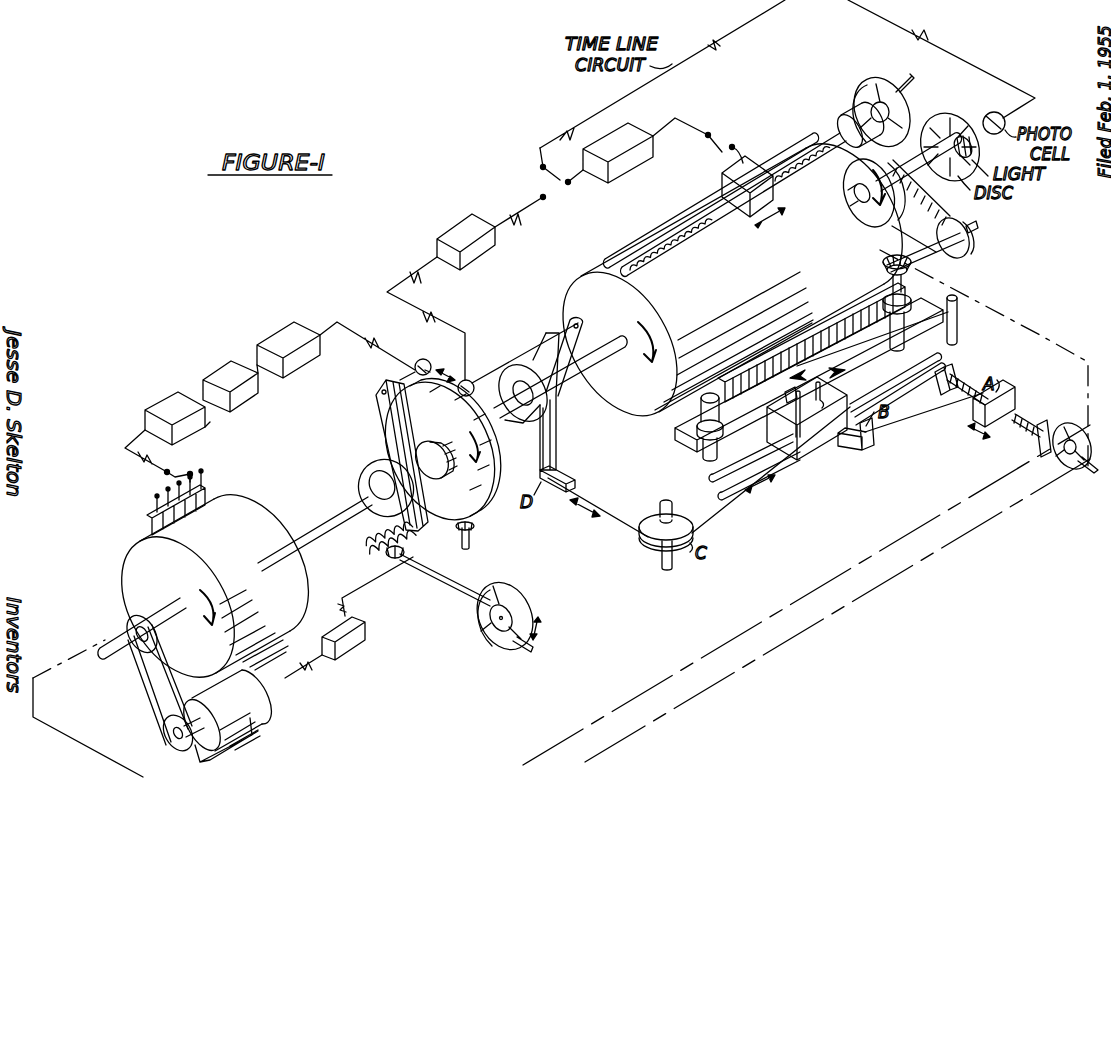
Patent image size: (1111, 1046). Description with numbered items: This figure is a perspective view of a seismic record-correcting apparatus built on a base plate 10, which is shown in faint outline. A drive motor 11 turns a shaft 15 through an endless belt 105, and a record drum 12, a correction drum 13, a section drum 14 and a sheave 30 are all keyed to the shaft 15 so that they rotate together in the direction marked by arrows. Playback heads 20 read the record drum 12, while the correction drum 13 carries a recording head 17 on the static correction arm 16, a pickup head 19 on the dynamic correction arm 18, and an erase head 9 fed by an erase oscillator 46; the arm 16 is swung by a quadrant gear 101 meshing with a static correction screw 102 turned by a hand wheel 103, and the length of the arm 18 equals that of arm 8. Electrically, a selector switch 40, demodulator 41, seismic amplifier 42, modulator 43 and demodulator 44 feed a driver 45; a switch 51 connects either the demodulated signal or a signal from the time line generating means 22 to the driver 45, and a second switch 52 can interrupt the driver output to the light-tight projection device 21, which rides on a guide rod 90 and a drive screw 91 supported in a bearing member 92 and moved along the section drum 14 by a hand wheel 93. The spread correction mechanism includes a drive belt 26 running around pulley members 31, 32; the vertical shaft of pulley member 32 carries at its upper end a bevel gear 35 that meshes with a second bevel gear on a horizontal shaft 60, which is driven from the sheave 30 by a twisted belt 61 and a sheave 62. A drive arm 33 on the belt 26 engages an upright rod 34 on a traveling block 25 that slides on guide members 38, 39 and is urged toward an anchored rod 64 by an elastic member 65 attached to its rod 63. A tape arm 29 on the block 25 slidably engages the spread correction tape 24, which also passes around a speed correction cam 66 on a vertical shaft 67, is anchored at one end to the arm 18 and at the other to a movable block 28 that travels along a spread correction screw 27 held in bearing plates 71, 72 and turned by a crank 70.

The arm 8 is at (578, 340).
The erase head 9 is at (470, 530).
The base plate 10 is at (890, 575).
The drive motor 11 is at (240, 700).
The record drum 12 is at (125, 577).
The correction drum 13 is at (486, 508).
The section drum 14 is at (630, 400).
The shaft 15 is at (275, 540).
The static correction arm 16 is at (378, 416).
The recording head 17 is at (426, 368).
The dynamic correction arm 18 is at (548, 442).
The pickup head 19 is at (470, 380).
The playback heads 20 is at (150, 528).
The section recording means 21 is at (744, 162).
The time line generating means 22 is at (940, 114).
The spread correction tape 24 is at (922, 416).
The traveling block 25 is at (812, 448).
The drive belt 26 is at (742, 430).
The spread correction screw 27 is at (1022, 424).
The spread correction head 28 is at (1004, 398).
The tape arm 29 is at (876, 442).
The sheave 30 is at (880, 228).
The pulley member 31 is at (701, 416).
The pulley member 32 is at (906, 306).
The drive arm 33 is at (792, 396).
The upright rod 34 is at (773, 430).
The bevel gear 35 is at (904, 278).
The guide member 38 is at (732, 488).
The guide member 39 is at (722, 472).
The selector switch 40 is at (165, 478).
The demodulator 41 is at (220, 376).
The seismic amplifier 42 is at (245, 400).
The modulator 43 is at (266, 328).
The demodulator 44 is at (448, 222).
The driver 45 is at (645, 158).
The erase oscillator 46 is at (360, 633).
The switch 51 is at (556, 183).
The second switch 52 is at (720, 148).
The shaft 60 is at (976, 226).
The twisted belt 61 is at (915, 205).
The sheave 62 is at (940, 248).
The upright rod 63 is at (823, 402).
The upright rod 64 is at (958, 326).
The elastic member 65 is at (922, 338).
The speed correction cam 66 is at (656, 552).
The vertical shaft 67 is at (670, 565).
The crank 70 is at (1060, 460).
The bearing plate 71 is at (950, 372).
The bearing plate 72 is at (1046, 426).
The guide rod 90 is at (668, 226).
The drive screw 91 is at (690, 232).
The bearing member 92 is at (840, 122).
The hand wheel 93 is at (862, 92).
The gear 101 is at (372, 535).
The static correction screw 102 is at (378, 554).
The hand wheel 103 is at (529, 604).
The endless belt 105 is at (148, 692).